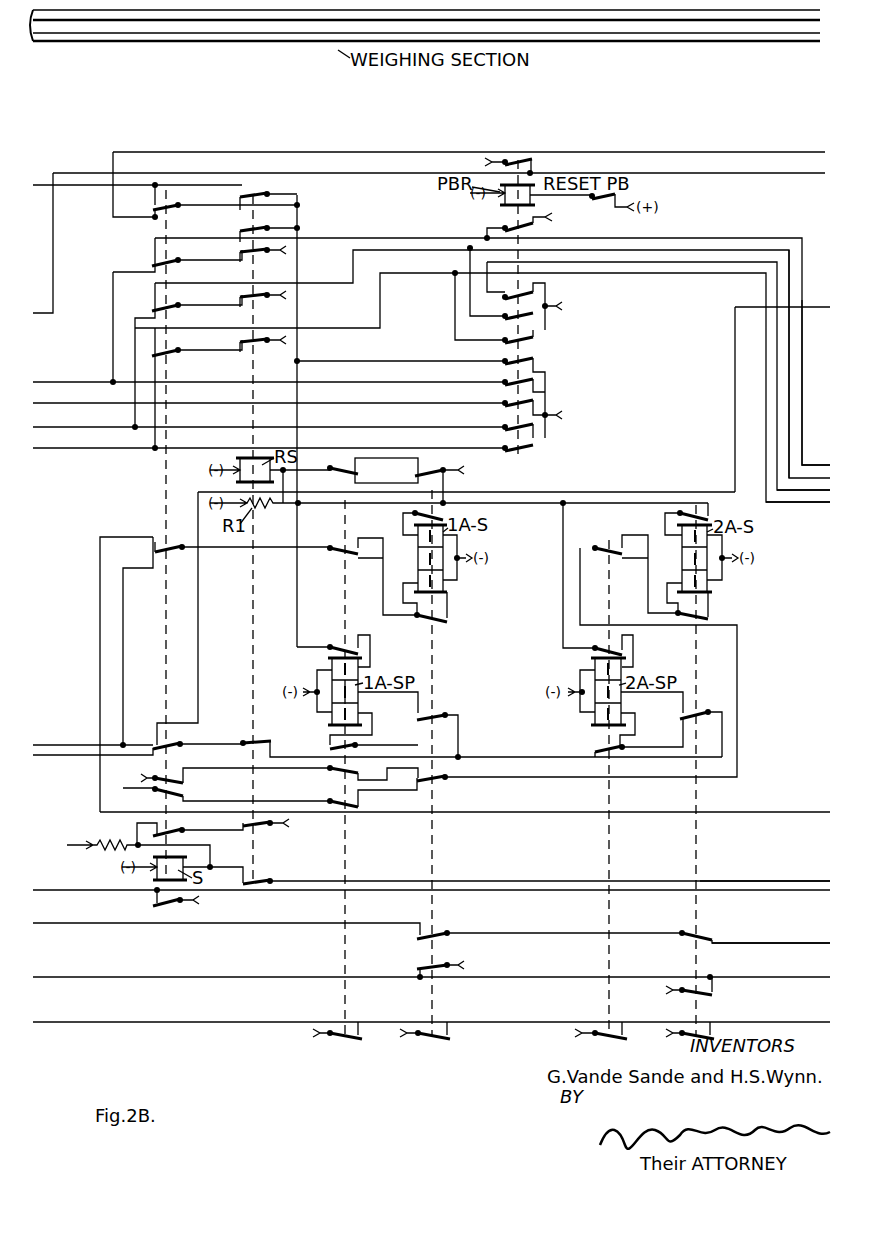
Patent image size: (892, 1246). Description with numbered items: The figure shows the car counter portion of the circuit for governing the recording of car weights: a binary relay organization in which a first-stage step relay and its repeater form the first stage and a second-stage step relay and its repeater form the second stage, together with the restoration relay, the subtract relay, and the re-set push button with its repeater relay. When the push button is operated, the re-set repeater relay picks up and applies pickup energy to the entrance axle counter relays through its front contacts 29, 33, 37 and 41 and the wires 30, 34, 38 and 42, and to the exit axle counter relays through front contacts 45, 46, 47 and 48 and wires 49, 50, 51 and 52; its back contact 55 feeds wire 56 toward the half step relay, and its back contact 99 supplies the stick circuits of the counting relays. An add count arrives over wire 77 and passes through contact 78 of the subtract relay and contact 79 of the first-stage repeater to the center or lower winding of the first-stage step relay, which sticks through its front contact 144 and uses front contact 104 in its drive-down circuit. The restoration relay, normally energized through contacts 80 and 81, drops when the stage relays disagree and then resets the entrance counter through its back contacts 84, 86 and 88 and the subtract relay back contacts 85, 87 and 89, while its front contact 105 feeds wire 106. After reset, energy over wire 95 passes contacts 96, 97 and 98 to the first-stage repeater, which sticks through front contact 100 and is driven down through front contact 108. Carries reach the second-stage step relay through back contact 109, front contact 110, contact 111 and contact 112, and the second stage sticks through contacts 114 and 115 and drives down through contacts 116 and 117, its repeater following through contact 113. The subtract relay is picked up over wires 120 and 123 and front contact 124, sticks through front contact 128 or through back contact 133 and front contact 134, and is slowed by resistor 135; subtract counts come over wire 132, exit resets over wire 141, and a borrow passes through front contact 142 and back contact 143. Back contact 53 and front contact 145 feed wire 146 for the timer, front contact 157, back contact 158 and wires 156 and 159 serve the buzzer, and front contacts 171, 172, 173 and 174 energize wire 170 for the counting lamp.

The front contact of relay PBR 29 is at (518, 455).
The wire 30 is at (270, 416).
The front contact of relay PBR 33 is at (515, 431).
The wire 34 is at (43, 448).
The front contact of relay PBR 37 is at (515, 409).
The wire 38 is at (43, 427).
The front contact of relay PBR 41 is at (515, 388).
The wire 42 is at (269, 371).
The front contact of relay PBR 45 is at (505, 340).
The front contact of relay PBR 46 is at (512, 232).
The front contact of relay PBR 47 is at (505, 315).
The front contact of relay PBR 48 is at (516, 296).
The wire 49 is at (817, 490).
The wire 50 is at (816, 383).
The wire 51 is at (790, 447).
The wire 52 is at (798, 519).
The back contact of relay 1A-S 53 is at (418, 966).
The back contact of relay PBR 55 is at (530, 163).
The wire 56 is at (43, 313).
The wire 77 is at (93, 733).
The contact of relay S 78 is at (165, 554).
The contact of relay 1A-SP 79 is at (345, 557).
The contact of relay 1A-S 80 is at (435, 466).
The contact of relay 1A-SP 81 is at (330, 478).
The back contact of relay RS 84 is at (273, 351).
The back contact of relay S 85 is at (165, 354).
The back contact of relay RS 86 is at (273, 306).
The back contact of relay S 87 is at (165, 309).
The back contact of relay RS 88 is at (273, 261).
The back contact of relay S 89 is at (165, 264).
The wire 95 is at (93, 760).
The contact of relay S 96 is at (165, 748).
The back contact of relay RS 97 is at (250, 740).
The contact of relay 1A-S 98 is at (430, 715).
The back contact of relay PBR 99 is at (510, 362).
The front contact of relay 1A-SP 100 is at (340, 645).
The front contact of relay 1A-S 104 is at (430, 622).
The front contact of relay RS 105 is at (255, 197).
The wire 106 is at (43, 173).
The front contact of relay 1A-SP 108 is at (355, 745).
The back contact of relay S 109 is at (160, 795).
The front contact of relay 1A-SP 110 is at (325, 800).
The contact of relay 1A-S 111 is at (437, 782).
The contact of relay 2A-SP 112 is at (630, 567).
The contact of relay 2A-S 113 is at (695, 713).
The front contact of relay 2A-SP 114 is at (600, 648).
The front contact of relay 2A-S 115 is at (705, 513).
The front contact of relay 2A-S 116 is at (700, 612).
The front contact of relay 2A-SP 117 is at (590, 750).
The wire 120 is at (431, 890).
The wire 123 is at (765, 869).
The front contact of relay RS 124 is at (536, 868).
The front contact of relay S 128 is at (150, 908).
The wire 132 is at (465, 800).
The back contact of relay RS 133 is at (278, 830).
The front contact of relay S 134 is at (190, 831).
The resistor 135 is at (110, 833).
The wire 141 is at (784, 388).
The front contact of relay S 142 is at (178, 780).
The back contact of relay 1A-SP 143 is at (372, 769).
The front contact of relay 1A-S 144 is at (410, 512).
The front contact of relay 2A-S 145 is at (690, 996).
The wire 146 is at (431, 965).
The wire 156 is at (226, 917).
The front contact of relay 1A-S 157 is at (432, 935).
The back contact of relay 2A-S 158 is at (698, 936).
The wire 159 is at (771, 932).
The wire 170 is at (431, 1010).
The front contact of relay 1A-SP 171 is at (345, 1040).
The front contact of relay 1A-S 172 is at (432, 1040).
The front contact of relay 2A-S 173 is at (598, 1025).
The front contact of relay 2A-SP 174 is at (712, 1028).